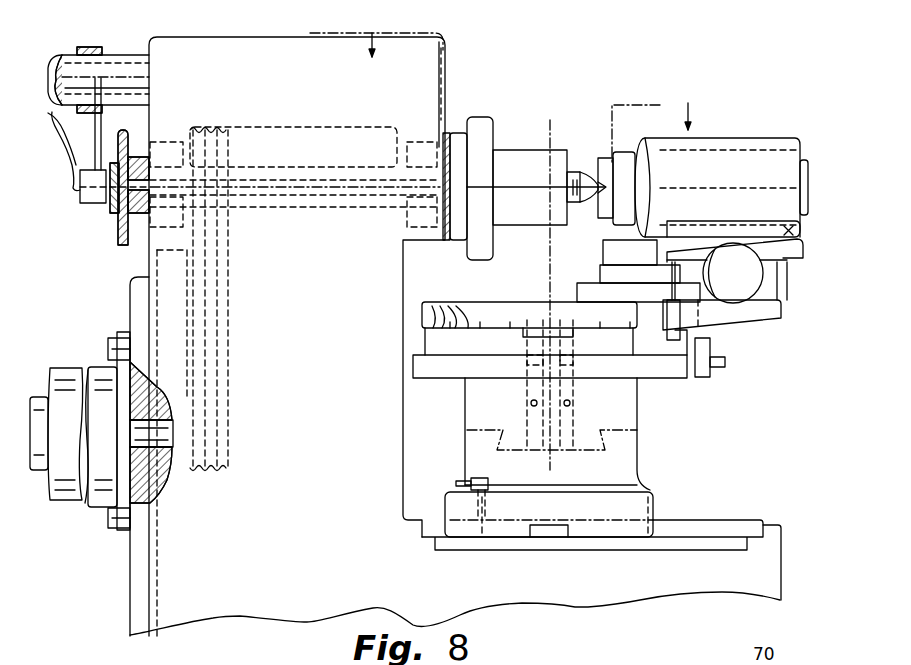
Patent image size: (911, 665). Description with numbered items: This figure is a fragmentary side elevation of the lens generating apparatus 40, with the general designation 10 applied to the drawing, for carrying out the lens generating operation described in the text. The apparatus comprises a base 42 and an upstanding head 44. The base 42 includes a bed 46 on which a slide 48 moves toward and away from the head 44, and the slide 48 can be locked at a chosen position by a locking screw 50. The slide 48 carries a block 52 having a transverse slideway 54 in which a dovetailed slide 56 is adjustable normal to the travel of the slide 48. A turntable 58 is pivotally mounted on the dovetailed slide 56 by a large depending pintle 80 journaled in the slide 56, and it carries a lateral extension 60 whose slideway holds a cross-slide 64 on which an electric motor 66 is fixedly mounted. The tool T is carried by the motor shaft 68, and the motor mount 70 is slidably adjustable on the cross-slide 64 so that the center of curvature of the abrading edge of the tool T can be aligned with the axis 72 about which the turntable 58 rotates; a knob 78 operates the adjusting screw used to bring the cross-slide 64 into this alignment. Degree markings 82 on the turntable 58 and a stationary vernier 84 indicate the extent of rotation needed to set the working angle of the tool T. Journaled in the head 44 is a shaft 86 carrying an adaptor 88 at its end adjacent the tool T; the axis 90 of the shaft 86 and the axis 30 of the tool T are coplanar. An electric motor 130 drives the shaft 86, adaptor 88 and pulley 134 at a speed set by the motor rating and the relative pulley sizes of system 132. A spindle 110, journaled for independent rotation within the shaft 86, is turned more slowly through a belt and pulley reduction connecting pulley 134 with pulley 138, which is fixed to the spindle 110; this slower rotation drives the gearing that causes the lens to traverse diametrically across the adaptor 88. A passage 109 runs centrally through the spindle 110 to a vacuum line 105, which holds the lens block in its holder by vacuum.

The machine tool apparatus 10 is at (503, 89).
The axis of tool 30 is at (665, 197).
The lens generating apparatus 40 is at (480, 70).
The base 42 is at (241, 611).
The head 44 is at (448, 46).
The bed 46 is at (690, 520).
The slide 48 is at (658, 504).
The locking screw 50 is at (469, 479).
The block 52 is at (640, 448).
The transverse slideway 54 is at (593, 445).
The dovetailed slide 56 is at (636, 392).
The turntable 58 is at (484, 316).
The lateral extension 60 is at (760, 317).
The cross-slide 64 is at (605, 255).
The electric motor 66 is at (757, 143).
The motor shaft 68 is at (596, 205).
The motor mount 70 is at (786, 231).
The axis 72 is at (550, 238).
The knob 78 is at (767, 265).
The pintle 80 is at (540, 386).
The degree markings 82 is at (446, 306).
The stationary vernier 84 is at (575, 332).
The shaft 86 is at (303, 166).
The adaptor 88 is at (542, 150).
The axis 90 is at (485, 186).
The vacuum line 105 is at (61, 140).
The passage 109 is at (263, 205).
The spindle 110 is at (334, 205).
The electric motor 130 is at (80, 502).
The pulley system 132 is at (232, 318).
The pulley 134 is at (136, 232).
The pulley 138 is at (112, 214).
The tool T is at (588, 170).